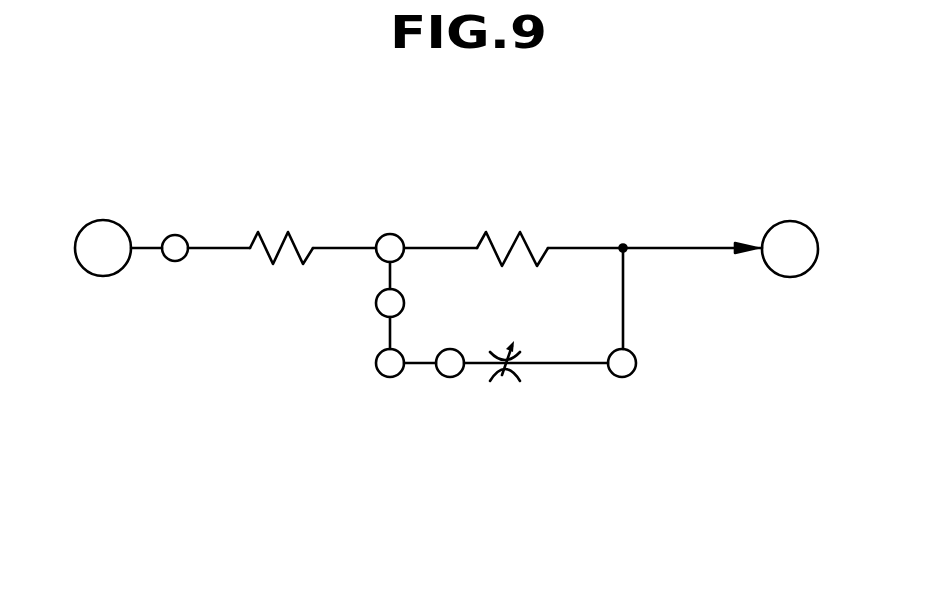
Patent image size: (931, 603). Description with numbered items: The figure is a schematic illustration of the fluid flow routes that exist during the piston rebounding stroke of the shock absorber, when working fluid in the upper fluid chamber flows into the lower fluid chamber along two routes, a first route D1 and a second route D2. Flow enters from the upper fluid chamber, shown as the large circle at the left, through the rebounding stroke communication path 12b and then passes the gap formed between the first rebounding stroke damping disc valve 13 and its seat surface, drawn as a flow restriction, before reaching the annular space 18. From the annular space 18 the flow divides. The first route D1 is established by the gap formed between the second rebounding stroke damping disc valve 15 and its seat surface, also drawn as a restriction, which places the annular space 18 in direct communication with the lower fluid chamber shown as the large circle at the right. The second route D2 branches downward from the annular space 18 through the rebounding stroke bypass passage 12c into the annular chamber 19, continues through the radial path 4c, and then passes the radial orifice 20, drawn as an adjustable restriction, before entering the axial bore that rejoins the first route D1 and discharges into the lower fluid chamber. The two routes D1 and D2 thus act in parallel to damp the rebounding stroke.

The rebounding stroke communication path 12b is at (186, 238).
The first rebounding stroke damping disc valve 13 is at (294, 235).
The annular space 18 is at (400, 238).
The second rebounding stroke damping disc valve 15 is at (522, 230).
The first route D1 is at (597, 242).
The second route D2 is at (592, 372).
The rebounding stroke bypass passage 12c is at (378, 309).
The annular chamber 19 is at (390, 378).
The radial path 4c is at (452, 378).
The radial orifice 20 is at (508, 377).